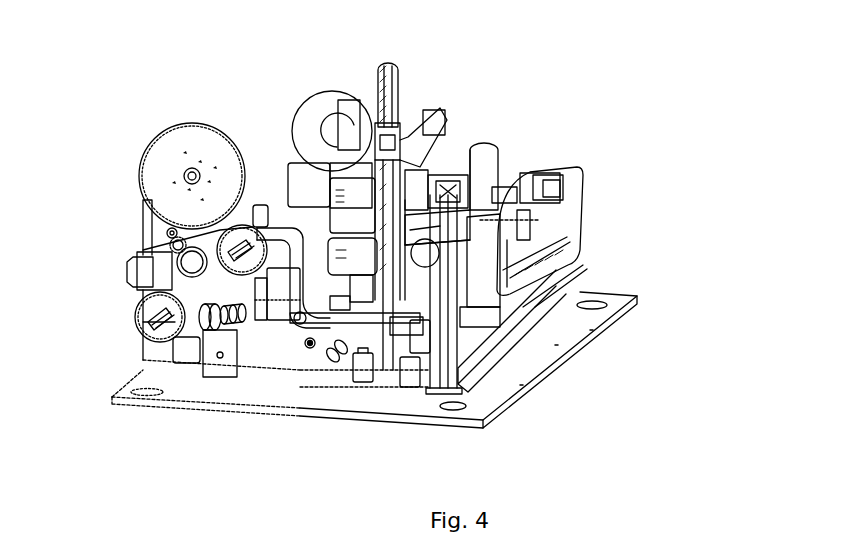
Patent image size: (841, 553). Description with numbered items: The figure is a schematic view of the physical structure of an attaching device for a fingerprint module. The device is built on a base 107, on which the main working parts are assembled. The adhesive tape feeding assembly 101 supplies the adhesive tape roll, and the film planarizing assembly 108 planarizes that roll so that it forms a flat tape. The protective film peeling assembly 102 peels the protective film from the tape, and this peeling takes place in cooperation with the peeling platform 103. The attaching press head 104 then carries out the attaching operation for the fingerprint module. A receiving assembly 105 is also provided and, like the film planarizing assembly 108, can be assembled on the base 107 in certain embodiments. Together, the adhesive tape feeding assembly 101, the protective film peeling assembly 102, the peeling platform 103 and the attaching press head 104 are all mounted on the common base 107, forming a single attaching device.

The adhesive tape feeding assembly 101 is at (140, 166).
The protective film peeling assembly 102 is at (312, 149).
The peeling platform 103 is at (331, 384).
The attaching press head 104 is at (416, 321).
The receiving assembly 105 is at (113, 371).
The base 107 is at (391, 360).
The film planarizing assembly 108 is at (228, 360).